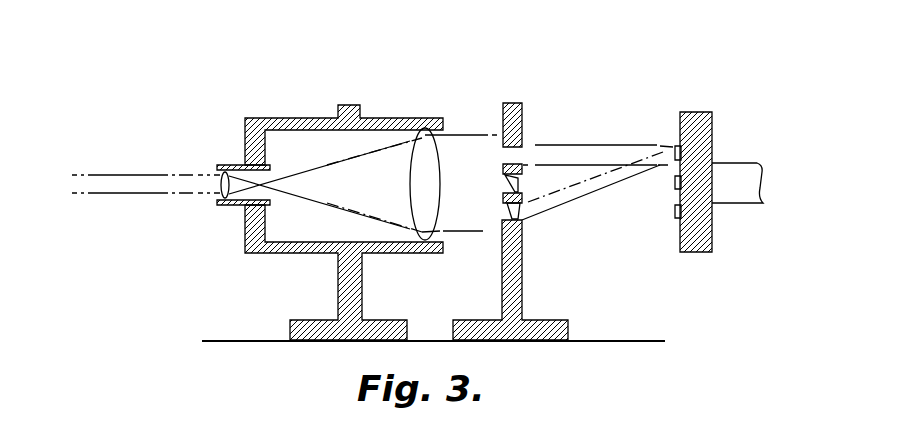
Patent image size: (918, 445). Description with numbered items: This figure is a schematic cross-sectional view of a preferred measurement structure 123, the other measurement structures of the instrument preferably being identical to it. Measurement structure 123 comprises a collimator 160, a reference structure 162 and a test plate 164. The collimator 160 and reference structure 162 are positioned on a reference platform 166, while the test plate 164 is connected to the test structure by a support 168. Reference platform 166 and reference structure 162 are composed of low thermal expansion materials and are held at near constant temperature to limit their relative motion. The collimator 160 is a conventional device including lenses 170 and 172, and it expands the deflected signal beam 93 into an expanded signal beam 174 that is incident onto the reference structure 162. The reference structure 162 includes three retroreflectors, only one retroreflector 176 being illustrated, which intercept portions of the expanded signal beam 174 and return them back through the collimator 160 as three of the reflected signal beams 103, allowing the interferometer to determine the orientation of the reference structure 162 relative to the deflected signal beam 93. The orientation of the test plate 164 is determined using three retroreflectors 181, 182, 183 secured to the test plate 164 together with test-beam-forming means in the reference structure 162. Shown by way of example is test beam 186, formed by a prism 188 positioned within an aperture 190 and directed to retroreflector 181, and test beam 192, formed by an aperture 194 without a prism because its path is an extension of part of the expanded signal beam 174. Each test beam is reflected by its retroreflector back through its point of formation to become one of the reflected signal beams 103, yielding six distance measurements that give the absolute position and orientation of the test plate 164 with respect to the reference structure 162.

The deflected signal beam 93 is at (146, 159).
The reflected signal beams 103 is at (103, 172).
The measurement structure 123 is at (546, 88).
The collimator 160 is at (240, 117).
The reference structure 162 is at (501, 103).
The test plate 164 is at (690, 103).
The reference platform 166 is at (243, 340).
The support 168 is at (730, 162).
The lens 170 is at (220, 179).
The lens 172 is at (420, 145).
The expanded signal beam 174 is at (467, 135).
The retroreflector 176 is at (504, 178).
The retroreflector 181 is at (676, 148).
The retroreflector 182 is at (675, 185).
The retroreflector 183 is at (676, 213).
The test beam 186 is at (556, 208).
The prism 188 is at (521, 216).
The aperture 190 is at (502, 221).
The test beam 192 is at (573, 152).
The aperture 194 is at (518, 148).